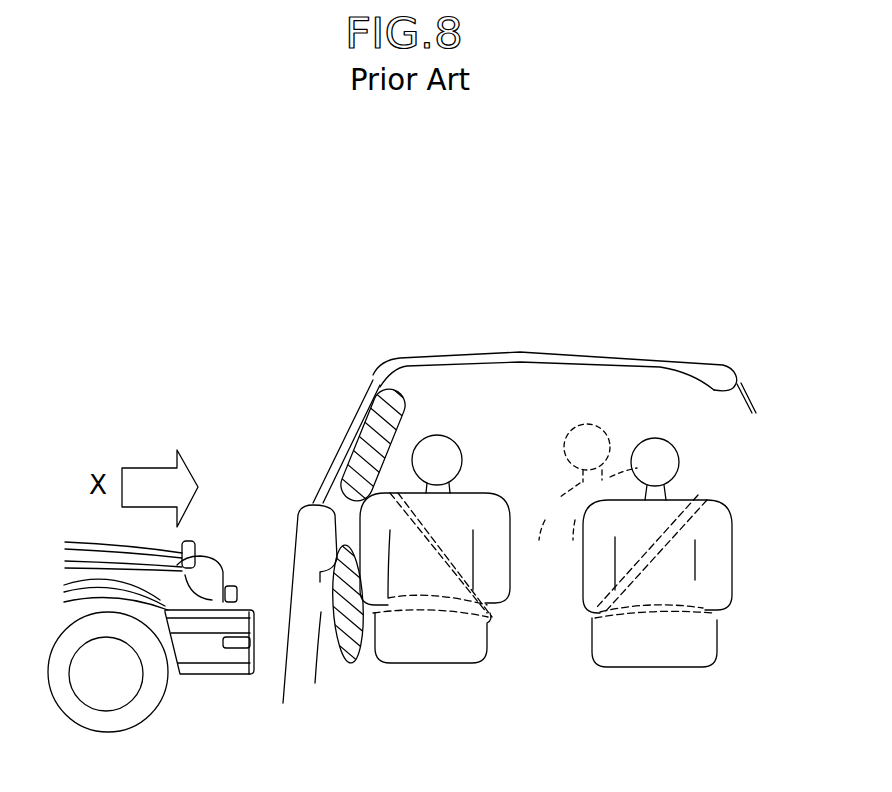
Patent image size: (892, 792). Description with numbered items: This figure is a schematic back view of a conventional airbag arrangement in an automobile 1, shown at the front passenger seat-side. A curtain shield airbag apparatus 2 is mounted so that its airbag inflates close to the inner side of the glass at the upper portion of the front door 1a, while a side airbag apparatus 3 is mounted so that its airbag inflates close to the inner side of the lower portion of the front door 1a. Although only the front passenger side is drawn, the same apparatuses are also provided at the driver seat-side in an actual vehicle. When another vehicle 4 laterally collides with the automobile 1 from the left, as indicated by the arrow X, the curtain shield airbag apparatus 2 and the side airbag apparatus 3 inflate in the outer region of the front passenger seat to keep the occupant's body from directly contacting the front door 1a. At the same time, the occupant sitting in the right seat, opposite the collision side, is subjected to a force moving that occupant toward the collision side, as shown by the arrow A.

The automobile 1 is at (681, 319).
The front door 1a is at (303, 545).
The curtain shield airbag apparatus 2 is at (368, 414).
The side airbag apparatus 3 is at (350, 663).
The another vehicle 4 is at (215, 677).
The arrow A is at (650, 432).